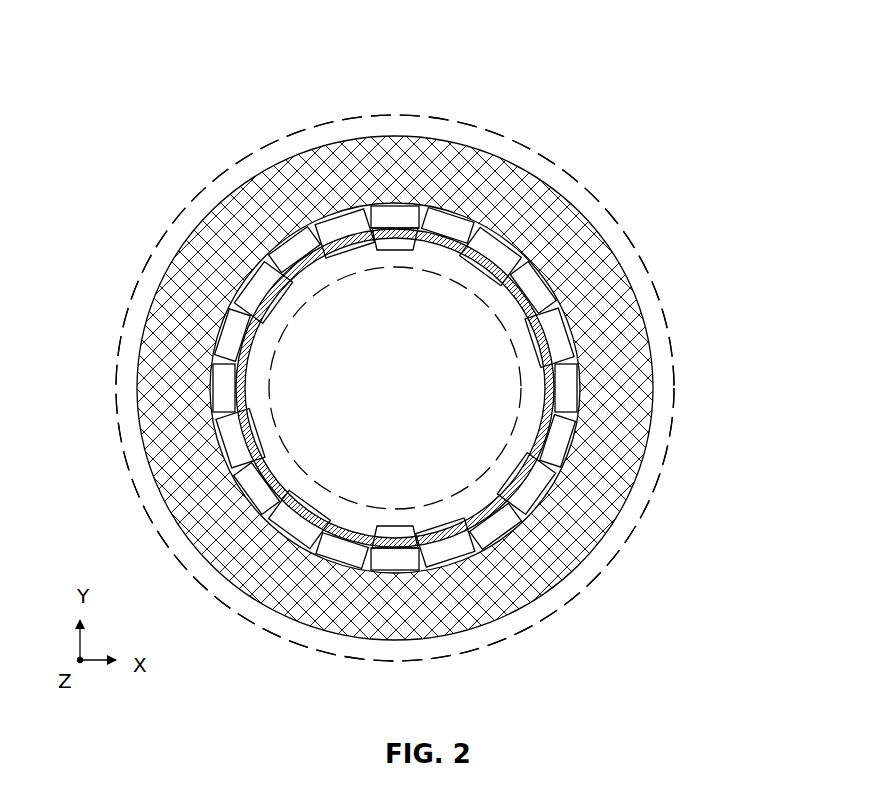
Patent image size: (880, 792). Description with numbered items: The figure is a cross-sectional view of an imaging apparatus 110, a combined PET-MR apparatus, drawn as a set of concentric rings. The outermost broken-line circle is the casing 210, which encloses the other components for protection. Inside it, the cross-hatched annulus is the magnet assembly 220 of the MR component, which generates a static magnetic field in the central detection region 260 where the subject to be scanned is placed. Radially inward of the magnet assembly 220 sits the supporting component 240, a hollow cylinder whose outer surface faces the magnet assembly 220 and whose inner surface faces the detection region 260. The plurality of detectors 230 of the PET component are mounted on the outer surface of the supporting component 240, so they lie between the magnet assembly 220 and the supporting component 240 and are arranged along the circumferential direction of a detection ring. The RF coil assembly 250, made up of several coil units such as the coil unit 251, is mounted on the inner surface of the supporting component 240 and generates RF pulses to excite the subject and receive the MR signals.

The imaging apparatus 110 is at (88, 30).
The casing 210 is at (282, 140).
The magnet assembly 220 is at (635, 334).
The detectors 230 is at (457, 215).
The supporting component 240 is at (505, 492).
The RF coil assembly 250 is at (319, 506).
The coil unit 251 is at (313, 513).
The detection region 260 is at (462, 418).